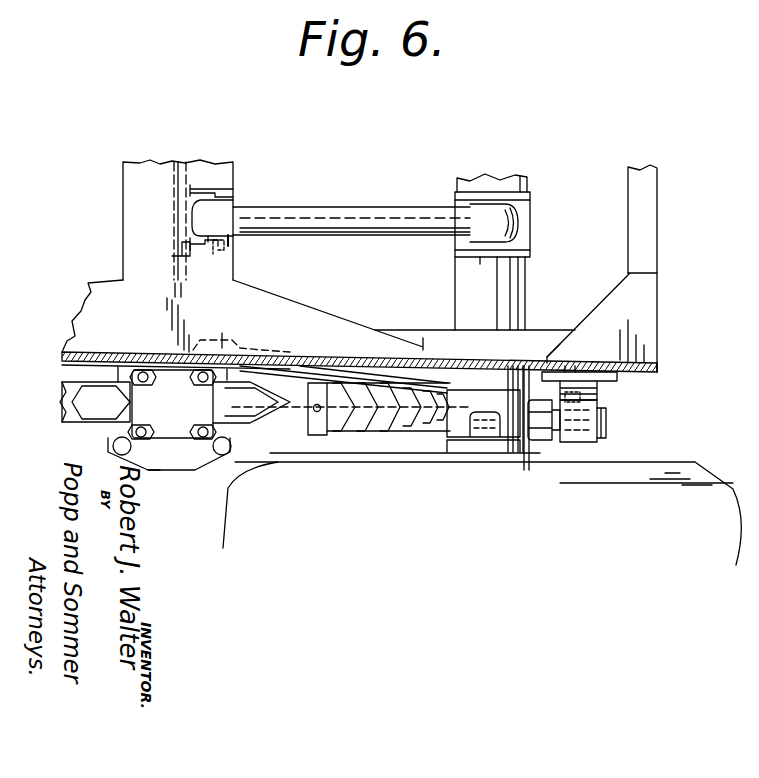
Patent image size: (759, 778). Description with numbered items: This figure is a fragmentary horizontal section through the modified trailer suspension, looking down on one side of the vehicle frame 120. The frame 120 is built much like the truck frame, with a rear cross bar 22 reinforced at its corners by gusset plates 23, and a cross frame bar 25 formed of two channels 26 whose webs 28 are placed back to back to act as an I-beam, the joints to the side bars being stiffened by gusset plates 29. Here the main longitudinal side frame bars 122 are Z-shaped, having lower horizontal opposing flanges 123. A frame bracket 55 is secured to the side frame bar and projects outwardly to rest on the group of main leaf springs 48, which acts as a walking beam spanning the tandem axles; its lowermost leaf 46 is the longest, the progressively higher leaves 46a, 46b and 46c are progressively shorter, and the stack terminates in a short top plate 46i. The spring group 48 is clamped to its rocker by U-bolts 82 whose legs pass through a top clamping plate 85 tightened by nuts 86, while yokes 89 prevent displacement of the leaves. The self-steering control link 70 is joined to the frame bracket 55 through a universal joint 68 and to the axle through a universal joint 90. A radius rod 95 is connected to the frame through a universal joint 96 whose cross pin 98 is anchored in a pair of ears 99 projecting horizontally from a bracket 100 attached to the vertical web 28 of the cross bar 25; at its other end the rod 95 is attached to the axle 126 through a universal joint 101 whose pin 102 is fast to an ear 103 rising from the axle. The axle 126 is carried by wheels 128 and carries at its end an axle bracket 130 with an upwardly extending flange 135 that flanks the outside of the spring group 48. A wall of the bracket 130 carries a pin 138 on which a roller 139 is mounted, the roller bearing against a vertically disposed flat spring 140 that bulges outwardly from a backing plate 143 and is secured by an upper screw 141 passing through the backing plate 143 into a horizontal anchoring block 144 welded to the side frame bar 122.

The rear cross bar 22 is at (650, 192).
The gusset plates 23 is at (652, 286).
The cross frame bar 25 is at (158, 165).
The channels 26 is at (123, 191).
The webs 28 is at (186, 162).
The gusset plates 29 is at (88, 292).
The lowermost leaf 46 is at (507, 430).
The leaf spring leaf 46a is at (466, 388).
The leaf spring leaf 46b is at (430, 430).
The leaf spring leaf 46c is at (396, 431).
The top plate 46i is at (175, 402).
The group of main leaf springs 48 is at (60, 412).
The frame bracket 55 is at (150, 473).
The universal joint 68 is at (241, 333).
The self-steering control links 70 is at (392, 362).
The U-bolts 82 is at (141, 370).
The top clamping plate 85 is at (172, 436).
The nuts 86 is at (192, 428).
The yokes 89 is at (308, 432).
The universal joint 90 is at (512, 380).
The radius rods 95 is at (376, 206).
The universal joint 96 is at (237, 205).
The cross pin 98 is at (216, 257).
The ears 99 is at (225, 255).
The bracket 100 is at (178, 255).
The universal joint 101 is at (518, 226).
The pin 102 is at (486, 258).
The ear 103 is at (530, 201).
The vehicle frame 120 is at (661, 357).
The main longitudinal side frame bars 122 is at (657, 372).
The lower horizontal opposing flanges 123 is at (543, 346).
The tandem axle 126 is at (490, 172).
The wheels 128 is at (223, 549).
The axle bracket 130 is at (447, 444).
The upwardly extending flange 135 is at (528, 462).
The pin 138 is at (606, 426).
The roller 139 is at (594, 442).
The flat spring 140 is at (599, 398).
The upper screw 141 is at (549, 400).
The backing plate 143 is at (599, 390).
The upper anchoring block 144 is at (570, 370).